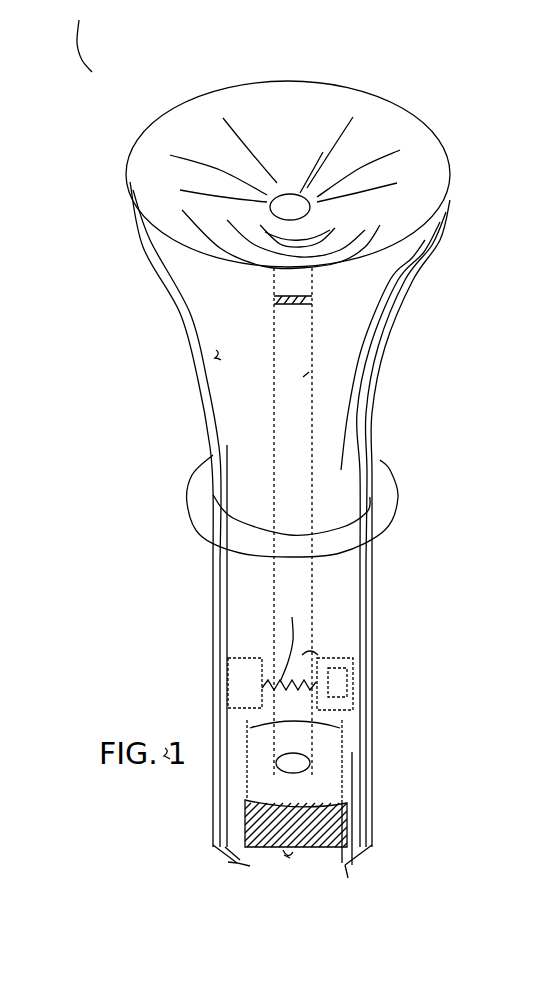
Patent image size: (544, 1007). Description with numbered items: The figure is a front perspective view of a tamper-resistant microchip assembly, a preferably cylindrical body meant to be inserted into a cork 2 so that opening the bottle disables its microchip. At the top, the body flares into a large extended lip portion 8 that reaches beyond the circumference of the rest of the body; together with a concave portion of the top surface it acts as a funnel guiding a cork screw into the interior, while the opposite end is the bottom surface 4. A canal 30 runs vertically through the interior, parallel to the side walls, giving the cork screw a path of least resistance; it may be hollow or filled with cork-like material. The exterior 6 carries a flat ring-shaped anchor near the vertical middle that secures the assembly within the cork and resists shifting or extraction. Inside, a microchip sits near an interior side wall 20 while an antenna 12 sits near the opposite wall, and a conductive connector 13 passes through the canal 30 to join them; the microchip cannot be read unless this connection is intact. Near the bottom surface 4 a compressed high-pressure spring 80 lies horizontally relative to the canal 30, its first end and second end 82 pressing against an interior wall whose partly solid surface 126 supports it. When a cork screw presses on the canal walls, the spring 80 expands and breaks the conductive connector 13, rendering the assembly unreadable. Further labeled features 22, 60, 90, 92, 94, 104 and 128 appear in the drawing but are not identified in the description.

The cork 2 is at (289, 132).
The bottom surface 4 is at (397, 281).
The exterior 6 is at (412, 265).
The extended lip portion 8 is at (126, 169).
The antenna 12 is at (214, 670).
The conductive connector 13 is at (289, 644).
The interior side wall 20 is at (214, 709).
The inner wall 22 is at (374, 725).
The canal 30 is at (304, 376).
The connector 60 is at (308, 650).
The spring 80 is at (387, 476).
The second end 82 is at (352, 822).
The base foot 90 is at (288, 874).
The base foot 92 is at (223, 878).
The base foot 94 is at (356, 882).
The central tube 104 is at (288, 303).
The partly solid surface 126 is at (240, 801).
The leg 128 is at (215, 846).